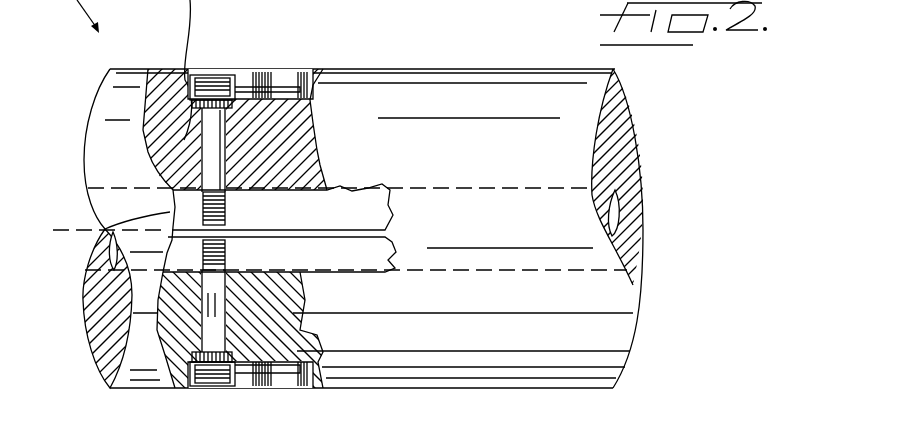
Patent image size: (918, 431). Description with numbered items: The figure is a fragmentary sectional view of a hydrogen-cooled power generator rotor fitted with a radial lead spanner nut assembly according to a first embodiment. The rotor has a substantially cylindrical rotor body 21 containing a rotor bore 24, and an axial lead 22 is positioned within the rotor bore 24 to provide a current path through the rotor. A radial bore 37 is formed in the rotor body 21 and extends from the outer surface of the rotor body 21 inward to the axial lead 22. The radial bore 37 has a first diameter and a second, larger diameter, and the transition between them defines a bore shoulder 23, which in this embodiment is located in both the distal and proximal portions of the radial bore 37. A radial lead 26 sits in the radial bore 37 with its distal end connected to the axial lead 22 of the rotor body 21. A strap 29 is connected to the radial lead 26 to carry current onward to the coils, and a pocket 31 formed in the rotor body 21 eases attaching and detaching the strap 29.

The rotor body 21 is at (460, 80).
The axial lead 22 is at (107, 230).
The bore shoulder 23 is at (228, 190).
The rotor bore 24 is at (158, 213).
The radial lead 26 is at (208, 136).
The strap 29 is at (268, 88).
The pocket 31 is at (313, 68).
The radial bore 37 is at (222, 143).